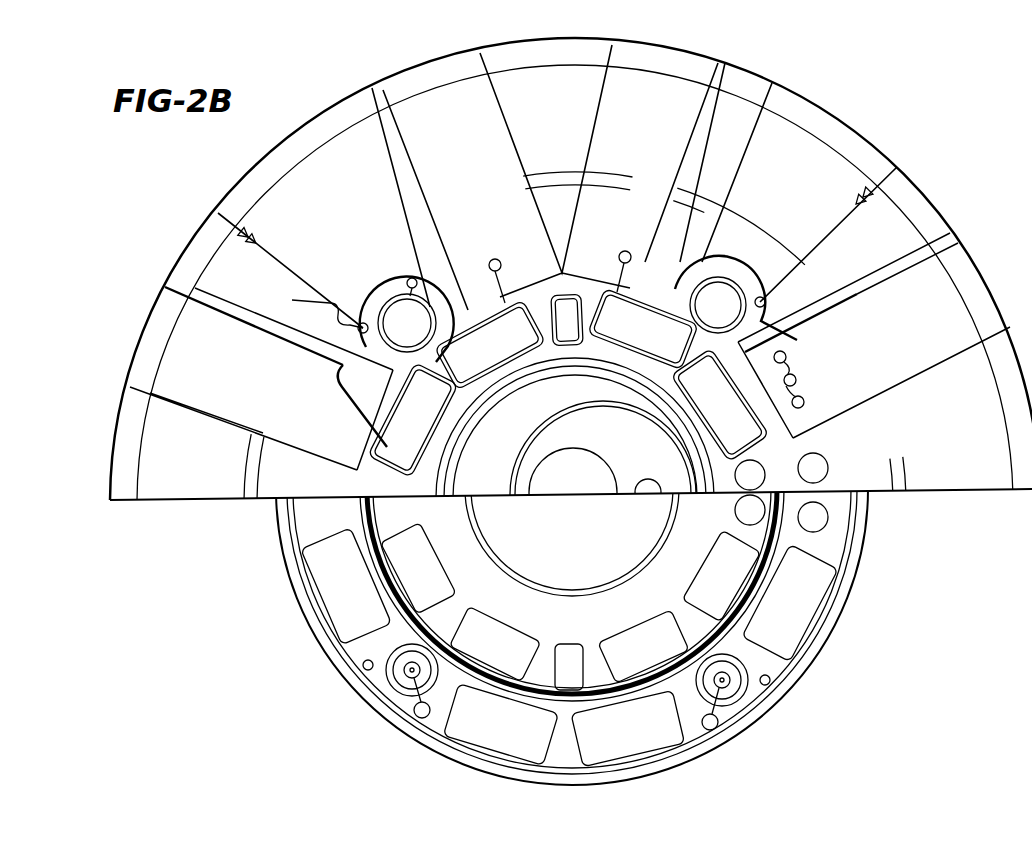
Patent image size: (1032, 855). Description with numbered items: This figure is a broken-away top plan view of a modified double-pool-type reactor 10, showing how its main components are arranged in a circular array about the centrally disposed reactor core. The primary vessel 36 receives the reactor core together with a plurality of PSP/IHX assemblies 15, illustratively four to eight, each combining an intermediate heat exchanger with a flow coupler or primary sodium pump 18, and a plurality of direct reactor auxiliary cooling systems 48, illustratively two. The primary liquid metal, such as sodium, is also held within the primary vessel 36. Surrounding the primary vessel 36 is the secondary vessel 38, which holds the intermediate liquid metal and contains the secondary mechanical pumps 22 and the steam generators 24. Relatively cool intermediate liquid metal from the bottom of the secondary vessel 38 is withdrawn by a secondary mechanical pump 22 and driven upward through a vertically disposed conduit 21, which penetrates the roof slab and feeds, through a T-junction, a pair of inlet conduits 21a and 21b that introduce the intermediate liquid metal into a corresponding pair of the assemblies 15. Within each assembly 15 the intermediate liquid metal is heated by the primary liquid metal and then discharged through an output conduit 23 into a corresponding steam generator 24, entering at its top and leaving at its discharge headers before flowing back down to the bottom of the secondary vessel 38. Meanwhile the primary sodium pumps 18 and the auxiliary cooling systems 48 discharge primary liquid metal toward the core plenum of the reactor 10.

The double-pool-type reactor 10 is at (926, 126).
The PSP/IHX assembly 15 is at (745, 452).
The primary sodium pump 18 is at (710, 412).
The vertically disposed conduit 21 is at (405, 280).
The inlet conduit 21a is at (397, 292).
The inlet conduit 21b is at (309, 309).
The secondary mechanical pump 22 is at (405, 355).
The output conduit 23 is at (800, 378).
The steam generator 24 is at (818, 430).
The primary vessel 36 is at (782, 533).
The secondary vessel 38 is at (860, 525).
The direct reactor auxiliary cooling system 48 is at (570, 350).